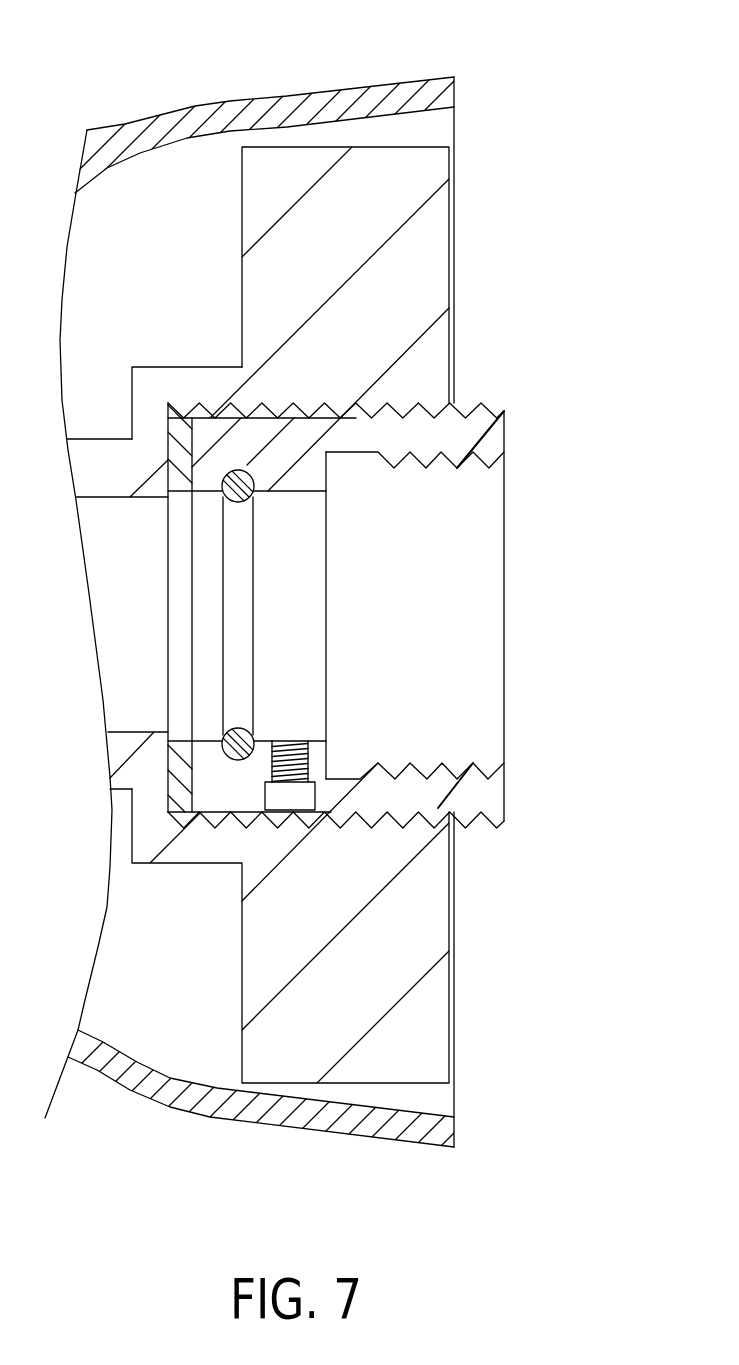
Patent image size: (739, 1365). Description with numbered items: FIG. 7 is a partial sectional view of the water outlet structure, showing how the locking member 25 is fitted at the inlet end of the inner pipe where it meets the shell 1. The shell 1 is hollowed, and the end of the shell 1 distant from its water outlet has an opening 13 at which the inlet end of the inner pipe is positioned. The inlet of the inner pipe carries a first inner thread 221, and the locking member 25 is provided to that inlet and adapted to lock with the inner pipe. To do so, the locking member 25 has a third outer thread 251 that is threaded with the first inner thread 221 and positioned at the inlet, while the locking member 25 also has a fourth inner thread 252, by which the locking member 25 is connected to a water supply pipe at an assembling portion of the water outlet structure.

The shell 1 is at (232, 110).
The opening 13 is at (434, 128).
The first inner thread 221 is at (359, 412).
The locking member 25 is at (495, 435).
The third outer thread 251 is at (467, 822).
The fourth inner thread 252 is at (447, 770).